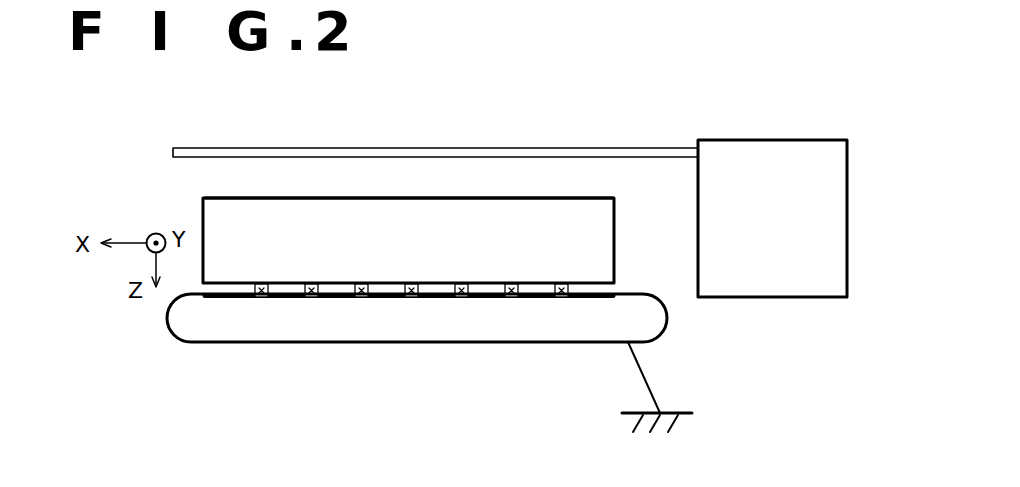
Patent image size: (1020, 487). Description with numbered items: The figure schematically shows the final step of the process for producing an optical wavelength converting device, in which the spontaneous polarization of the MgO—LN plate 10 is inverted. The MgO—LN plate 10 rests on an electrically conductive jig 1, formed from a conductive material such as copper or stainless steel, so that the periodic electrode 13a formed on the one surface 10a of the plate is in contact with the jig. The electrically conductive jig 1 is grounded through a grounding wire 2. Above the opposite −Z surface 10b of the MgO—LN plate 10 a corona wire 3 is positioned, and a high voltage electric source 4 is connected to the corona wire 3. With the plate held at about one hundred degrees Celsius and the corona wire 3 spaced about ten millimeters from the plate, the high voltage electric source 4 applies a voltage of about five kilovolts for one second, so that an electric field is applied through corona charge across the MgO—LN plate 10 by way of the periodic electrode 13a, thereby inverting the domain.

The electrically conductive jig 1 is at (507, 333).
The grounding wire 2 is at (649, 382).
The corona wire 3 is at (298, 150).
The high voltage electric source 4 is at (833, 226).
The MgO—LN plate 10 is at (618, 242).
The one surface of the MgO—LN plate 10a is at (227, 285).
The −Z surface of the MgO—LN plate 10b is at (219, 198).
The periodic electrode 13a is at (407, 294).